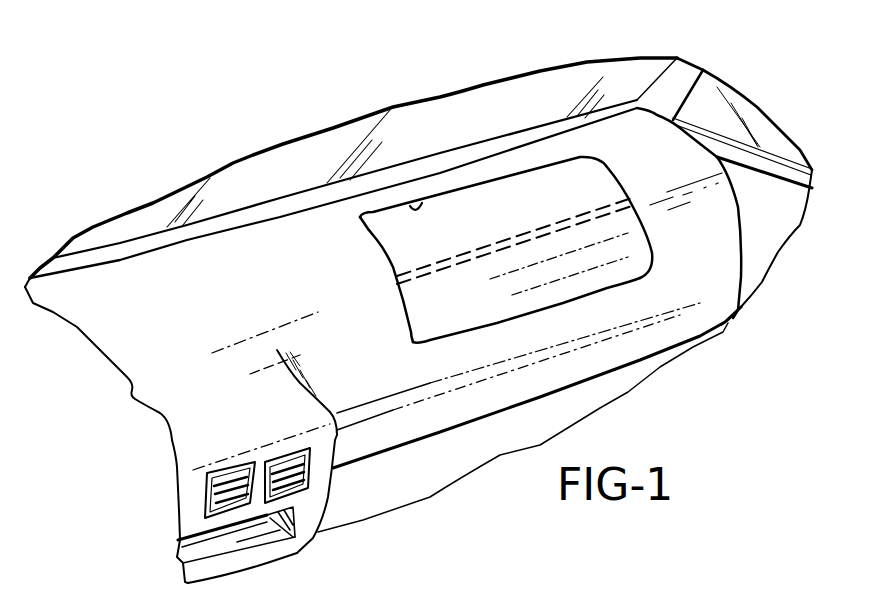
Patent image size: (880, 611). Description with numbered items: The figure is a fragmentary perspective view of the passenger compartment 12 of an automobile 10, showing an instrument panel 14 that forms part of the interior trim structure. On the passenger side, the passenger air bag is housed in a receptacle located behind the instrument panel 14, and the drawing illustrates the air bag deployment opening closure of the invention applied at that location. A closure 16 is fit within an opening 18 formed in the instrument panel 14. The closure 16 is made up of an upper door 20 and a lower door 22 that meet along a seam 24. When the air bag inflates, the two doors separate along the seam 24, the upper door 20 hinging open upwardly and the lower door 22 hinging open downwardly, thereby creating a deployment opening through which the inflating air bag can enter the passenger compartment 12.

The automobile 10 is at (156, 172).
The passenger compartment 12 is at (400, 490).
The instrument panel 14 is at (190, 325).
The closure 16 is at (355, 234).
The opening 18 is at (414, 203).
The upper door 20 is at (488, 193).
The lower door 22 is at (450, 305).
The seam 24 is at (538, 222).